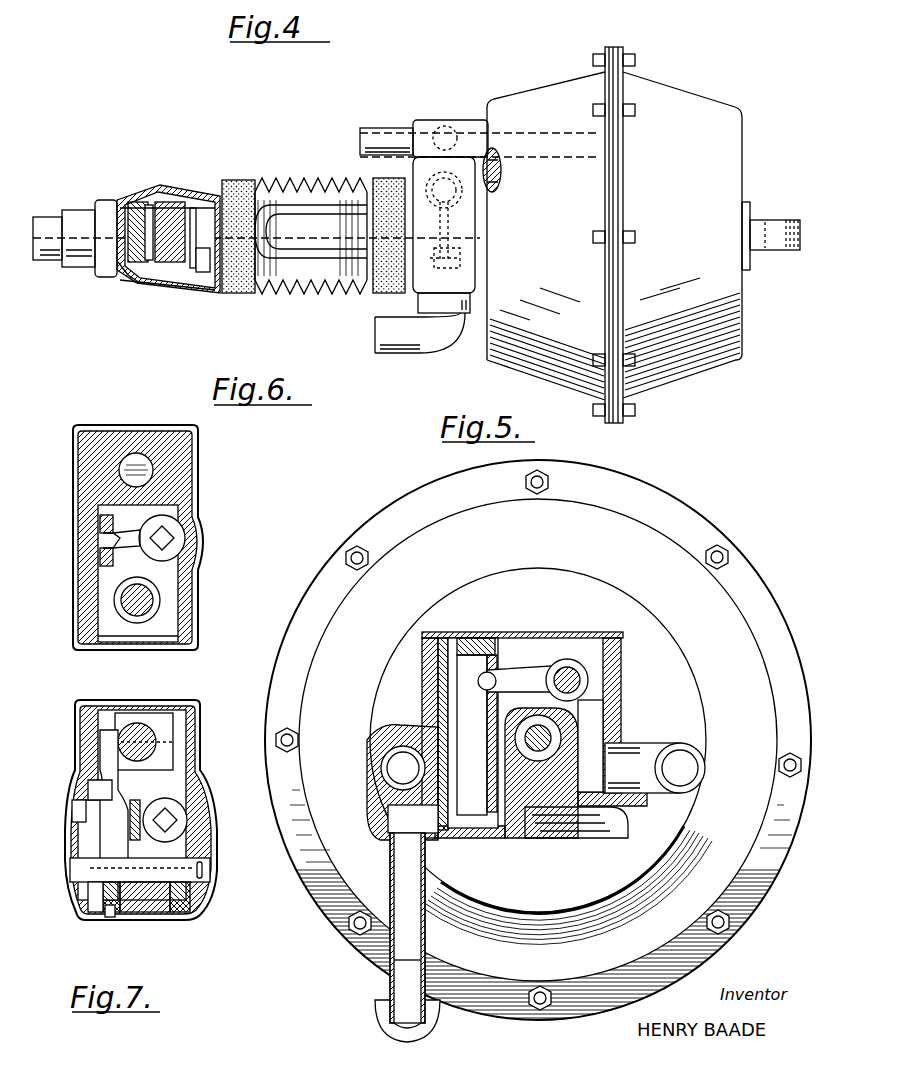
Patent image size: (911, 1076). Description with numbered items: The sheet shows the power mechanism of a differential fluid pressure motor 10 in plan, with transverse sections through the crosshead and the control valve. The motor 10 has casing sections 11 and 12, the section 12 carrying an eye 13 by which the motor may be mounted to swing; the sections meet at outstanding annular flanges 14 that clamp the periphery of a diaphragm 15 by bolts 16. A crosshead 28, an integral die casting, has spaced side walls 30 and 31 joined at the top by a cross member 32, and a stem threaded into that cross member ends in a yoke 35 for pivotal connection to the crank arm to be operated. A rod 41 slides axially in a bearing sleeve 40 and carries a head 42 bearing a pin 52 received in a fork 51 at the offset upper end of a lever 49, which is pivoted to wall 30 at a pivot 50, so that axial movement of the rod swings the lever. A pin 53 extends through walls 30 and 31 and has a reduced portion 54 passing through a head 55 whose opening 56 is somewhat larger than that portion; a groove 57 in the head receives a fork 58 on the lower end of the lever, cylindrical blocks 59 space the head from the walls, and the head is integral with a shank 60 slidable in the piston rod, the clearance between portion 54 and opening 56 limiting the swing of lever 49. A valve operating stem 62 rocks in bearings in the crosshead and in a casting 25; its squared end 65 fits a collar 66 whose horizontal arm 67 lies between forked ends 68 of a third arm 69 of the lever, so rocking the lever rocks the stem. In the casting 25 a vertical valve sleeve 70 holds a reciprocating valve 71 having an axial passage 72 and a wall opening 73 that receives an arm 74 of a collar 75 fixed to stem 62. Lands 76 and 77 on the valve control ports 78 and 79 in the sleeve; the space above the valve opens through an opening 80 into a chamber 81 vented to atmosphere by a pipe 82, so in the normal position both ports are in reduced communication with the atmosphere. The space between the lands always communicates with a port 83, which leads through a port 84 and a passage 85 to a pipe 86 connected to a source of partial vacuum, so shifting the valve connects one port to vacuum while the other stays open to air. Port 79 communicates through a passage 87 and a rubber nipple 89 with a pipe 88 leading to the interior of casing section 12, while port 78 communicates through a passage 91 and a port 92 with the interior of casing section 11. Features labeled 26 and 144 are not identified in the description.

In FIG. 4, the differential fluid pressure motor 10 is at (705, 90).
In FIG. 5, the differential fluid pressure motor 10 is at (691, 503).
In FIG. 4, the casing section 11 is at (557, 96).
In FIG. 5, the casing section 11 is at (645, 522).
In FIG. 4, the casing section 12 is at (661, 96).
In FIG. 4, the eye 13 is at (780, 218).
In FIG. 4, the annular flanges 14 is at (607, 190).
In FIG. 5, the annular flanges 14 is at (610, 492).
In FIG. 4, the diaphragm 15 is at (611, 205).
In FIG. 4, the bolts 16 is at (630, 234).
In FIG. 5, the bolts 16 is at (518, 482).
In FIG. 4, the casting 25 is at (476, 300).
In FIG. 5, the casting 25 is at (621, 668).
In FIG. 5, the bushing 26 is at (565, 734).
In FIG. 4, the crosshead 28 is at (174, 216).
In FIG. 6, the crosshead 28 is at (198, 620).
In FIG. 4, the side wall 30 is at (168, 239).
In FIG. 6, the side wall 30 is at (78, 572).
In FIG. 7, the side wall 30 is at (78, 770).
In FIG. 6, the side wall 31 is at (195, 592).
In FIG. 7, the side wall 31 is at (197, 766).
In FIG. 6, the cross member 32 is at (186, 510).
In FIG. 4, the yoke 35 is at (292, 190).
In FIG. 4, the bearing sleeve 40 is at (50, 224).
In FIG. 4, the rod 41 is at (82, 212).
In FIG. 7, the rod 41 is at (130, 735).
In FIG. 4, the head 42 is at (128, 285).
In FIG. 7, the head 42 is at (143, 725).
In FIG. 4, the lever 49 is at (150, 202).
In FIG. 6, the lever 49 is at (104, 572).
In FIG. 7, the lever 49 is at (110, 787).
In FIG. 7, the pivot 50 is at (148, 810).
In FIG. 4, the fork 51 is at (118, 202).
In FIG. 7, the fork 51 is at (100, 740).
In FIG. 7, the pin 52 is at (165, 770).
In FIG. 7, the pin 53 is at (212, 870).
In FIG. 7, the reduced portion 54 is at (176, 912).
In FIG. 7, the head 55 is at (140, 912).
In FIG. 7, the opening 56 is at (113, 912).
In FIG. 7, the groove 57 is at (98, 912).
In FIG. 7, the fork 58 is at (108, 917).
In FIG. 7, the cylindrical blocks 59 is at (78, 912).
In FIG. 6, the shank 60 is at (140, 612).
In FIG. 4, the valve operating stem 62 is at (228, 295).
In FIG. 5, the valve operating stem 62 is at (568, 672).
In FIG. 6, the squared end 65 is at (168, 535).
In FIG. 7, the squared end 65 is at (172, 822).
In FIG. 4, the collar 66 is at (194, 240).
In FIG. 6, the collar 66 is at (178, 546).
In FIG. 7, the collar 66 is at (187, 800).
In FIG. 6, the arm 67 is at (133, 556).
In FIG. 7, the arm 67 is at (72, 808).
In FIG. 6, the forked ends 68 is at (100, 520).
In FIG. 4, the third arm 69 is at (195, 200).
In FIG. 7, the third arm 69 is at (206, 915).
In FIG. 5, the valve sleeve 70 is at (424, 690).
In FIG. 5, the valve 71 is at (462, 640).
In FIG. 5, the axial passage 72 is at (484, 652).
In FIG. 5, the opening 73 is at (530, 668).
In FIG. 4, the arm 74 is at (445, 217).
In FIG. 5, the arm 74 is at (533, 676).
In FIG. 4, the collar 75 is at (436, 268).
In FIG. 5, the collar 75 is at (588, 685).
In FIG. 5, the land 76 is at (425, 740).
In FIG. 5, the land 77 is at (460, 845).
In FIG. 5, the port 78 is at (442, 720).
In FIG. 5, the port 79 is at (436, 820).
In FIG. 5, the opening 80 is at (515, 640).
In FIG. 5, the chamber 81 is at (604, 712).
In FIG. 4, the pipe 82 is at (376, 332).
In FIG. 5, the pipe 82 is at (665, 752).
In FIG. 5, the port 83 is at (440, 770).
In FIG. 5, the port 84 is at (392, 748).
In FIG. 5, the passage 85 is at (382, 768).
In FIG. 4, the pipe 86 is at (362, 142).
In FIG. 5, the passage 87 is at (386, 828).
In FIG. 4, the pipe 88 is at (516, 133).
In FIG. 5, the pipe 88 is at (388, 878).
In FIG. 5, the rubber nipple 89 is at (386, 848).
In FIG. 4, the passage 91 is at (500, 186).
In FIG. 5, the passage 91 is at (420, 736).
In FIG. 4, the port 92 is at (500, 168).
In FIG. 5, the port 92 is at (482, 733).
In FIG. 6, the hole 144 is at (136, 454).